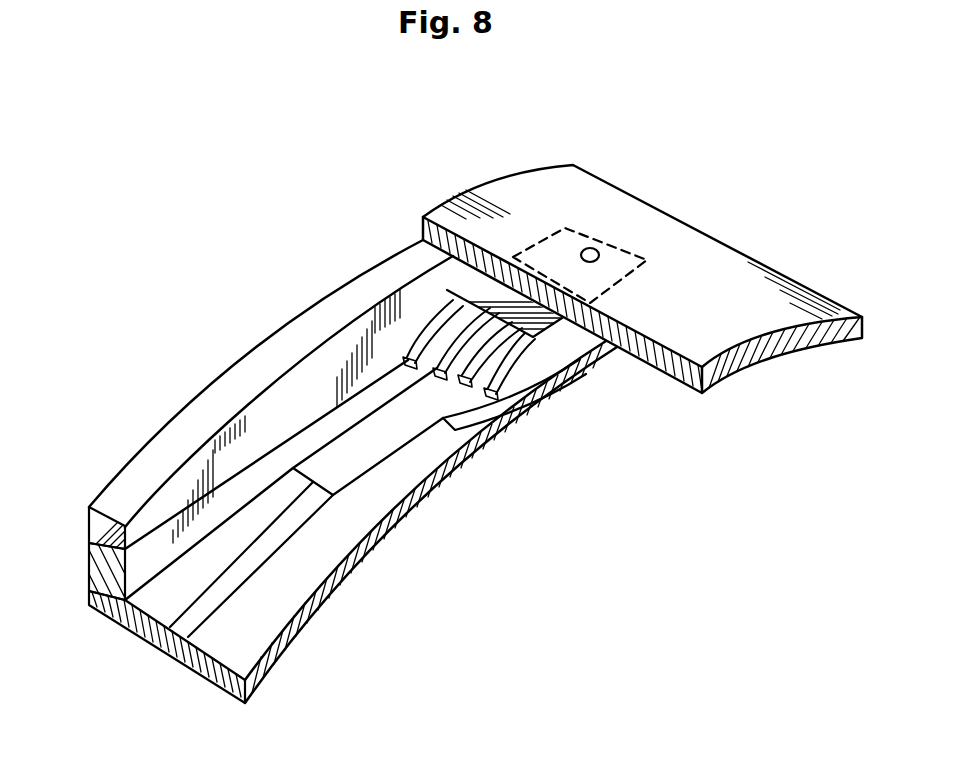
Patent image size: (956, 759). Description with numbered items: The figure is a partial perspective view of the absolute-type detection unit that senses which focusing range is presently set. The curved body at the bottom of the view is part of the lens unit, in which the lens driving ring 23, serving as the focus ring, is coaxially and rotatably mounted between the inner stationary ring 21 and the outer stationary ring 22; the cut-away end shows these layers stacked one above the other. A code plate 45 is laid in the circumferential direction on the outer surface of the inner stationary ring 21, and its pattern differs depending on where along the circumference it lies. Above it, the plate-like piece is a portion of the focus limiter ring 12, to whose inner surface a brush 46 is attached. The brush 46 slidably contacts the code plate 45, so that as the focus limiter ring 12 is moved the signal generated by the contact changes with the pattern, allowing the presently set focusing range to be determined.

The focus limiter ring 12 is at (578, 183).
The inner stationary ring 21 is at (258, 680).
The outer stationary ring 22 is at (97, 521).
The lens driving ring 23 is at (97, 573).
The code plate 45 is at (363, 515).
The brush 46 is at (560, 325).